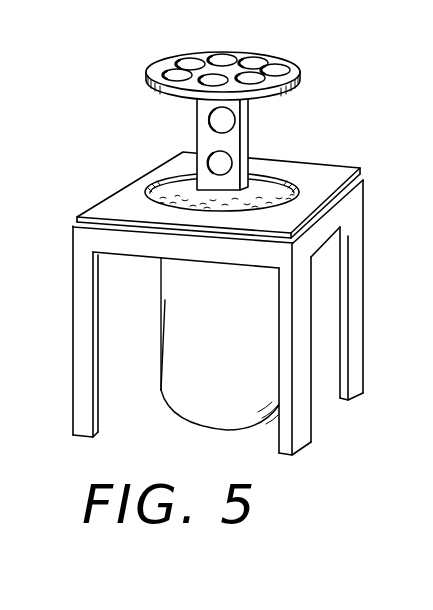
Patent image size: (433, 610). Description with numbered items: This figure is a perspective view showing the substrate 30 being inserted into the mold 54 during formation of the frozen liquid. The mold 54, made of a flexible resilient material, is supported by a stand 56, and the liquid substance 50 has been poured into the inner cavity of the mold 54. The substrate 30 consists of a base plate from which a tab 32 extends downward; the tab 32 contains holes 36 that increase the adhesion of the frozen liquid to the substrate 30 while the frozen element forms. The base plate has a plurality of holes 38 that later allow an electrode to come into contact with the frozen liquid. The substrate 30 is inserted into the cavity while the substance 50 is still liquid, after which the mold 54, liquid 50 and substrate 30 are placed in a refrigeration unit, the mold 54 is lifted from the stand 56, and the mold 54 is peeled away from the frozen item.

The substrate 30 is at (228, 54).
The holes 38 is at (255, 62).
The holes 36 is at (213, 123).
The tab 32 is at (217, 142).
The liquid substance 50 is at (260, 200).
The mold 54 is at (122, 198).
The stand 56 is at (85, 238).